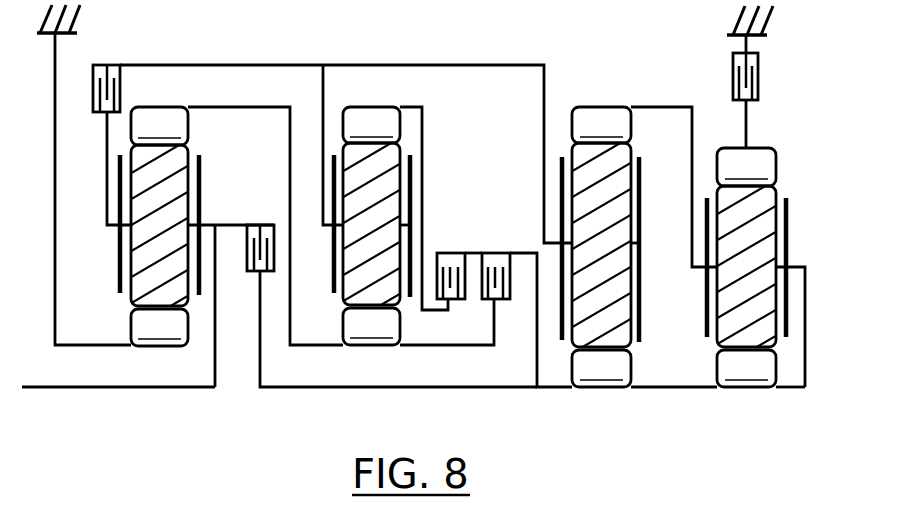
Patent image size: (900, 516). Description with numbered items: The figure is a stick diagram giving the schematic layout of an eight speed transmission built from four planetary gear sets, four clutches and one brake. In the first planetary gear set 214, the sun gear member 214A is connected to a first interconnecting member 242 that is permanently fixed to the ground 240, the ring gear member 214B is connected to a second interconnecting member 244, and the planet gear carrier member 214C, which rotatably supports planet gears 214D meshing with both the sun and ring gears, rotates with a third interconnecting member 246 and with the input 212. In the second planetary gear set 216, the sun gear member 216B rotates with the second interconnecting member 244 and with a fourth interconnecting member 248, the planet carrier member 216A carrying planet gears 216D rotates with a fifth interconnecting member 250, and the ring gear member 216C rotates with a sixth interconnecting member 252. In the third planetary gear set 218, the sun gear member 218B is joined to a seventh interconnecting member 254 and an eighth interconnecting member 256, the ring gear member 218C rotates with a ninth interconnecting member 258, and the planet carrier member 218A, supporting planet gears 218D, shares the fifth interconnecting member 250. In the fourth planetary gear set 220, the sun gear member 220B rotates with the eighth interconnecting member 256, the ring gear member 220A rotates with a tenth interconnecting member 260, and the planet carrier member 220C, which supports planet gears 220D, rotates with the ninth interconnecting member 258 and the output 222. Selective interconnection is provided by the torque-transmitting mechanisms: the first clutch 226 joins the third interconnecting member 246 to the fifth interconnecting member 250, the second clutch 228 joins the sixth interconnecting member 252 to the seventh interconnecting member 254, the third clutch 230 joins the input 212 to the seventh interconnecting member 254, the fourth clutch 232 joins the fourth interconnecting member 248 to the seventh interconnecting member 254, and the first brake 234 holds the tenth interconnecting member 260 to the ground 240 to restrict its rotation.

The input 212 is at (73, 390).
The planetary gear set 214 is at (157, 352).
The sun gear member 214A is at (159, 327).
The ring gear member 214B is at (159, 126).
The planet gear carrier member 214C is at (232, 201).
The planet gears 214D is at (130, 300).
The planetary gear set 216 is at (372, 352).
The planet carrier member 216A is at (410, 298).
The sun gear member 216B is at (371, 326).
The ring gear member 216C is at (371, 125).
The planet gears 216D is at (342, 148).
The planetary gear set 218 is at (598, 397).
The planet carrier member 218A is at (643, 192).
The sun gear member 218B is at (601, 368).
The ring gear member 218C is at (601, 125).
The planet gears 218D is at (642, 345).
The planetary gear set 220 is at (745, 394).
The ring gear member 220A is at (746, 167).
The sun gear member 220B is at (746, 368).
The planet carrier member 220C is at (788, 248).
The planet gears 220D is at (716, 343).
The output 222 is at (806, 316).
The first clutch 226 is at (120, 86).
The second clutch 228 is at (437, 265).
The third clutch 230 is at (247, 258).
The fourth clutch 232 is at (510, 262).
The first brake 234 is at (760, 68).
The ground 240 is at (78, 14).
The first interconnecting member 242 is at (54, 118).
The second interconnecting member 244 is at (230, 107).
The third interconnecting member 246 is at (106, 185).
The fourth interconnecting member 248 is at (443, 346).
The fifth interconnecting member 250 is at (298, 63).
The sixth interconnecting member 252 is at (424, 130).
The seventh interconnecting member 254 is at (420, 388).
The eighth interconnecting member 256 is at (655, 388).
The ninth interconnecting member 258 is at (655, 106).
The tenth interconnecting member 260 is at (748, 118).